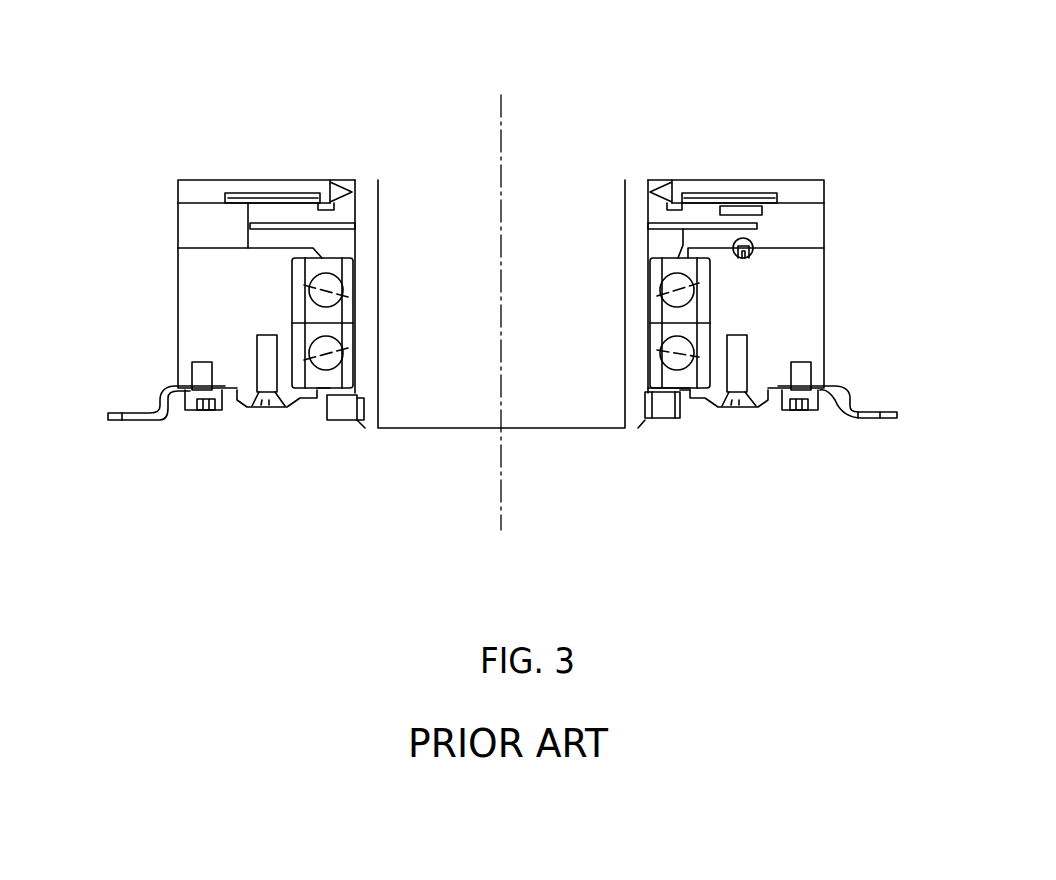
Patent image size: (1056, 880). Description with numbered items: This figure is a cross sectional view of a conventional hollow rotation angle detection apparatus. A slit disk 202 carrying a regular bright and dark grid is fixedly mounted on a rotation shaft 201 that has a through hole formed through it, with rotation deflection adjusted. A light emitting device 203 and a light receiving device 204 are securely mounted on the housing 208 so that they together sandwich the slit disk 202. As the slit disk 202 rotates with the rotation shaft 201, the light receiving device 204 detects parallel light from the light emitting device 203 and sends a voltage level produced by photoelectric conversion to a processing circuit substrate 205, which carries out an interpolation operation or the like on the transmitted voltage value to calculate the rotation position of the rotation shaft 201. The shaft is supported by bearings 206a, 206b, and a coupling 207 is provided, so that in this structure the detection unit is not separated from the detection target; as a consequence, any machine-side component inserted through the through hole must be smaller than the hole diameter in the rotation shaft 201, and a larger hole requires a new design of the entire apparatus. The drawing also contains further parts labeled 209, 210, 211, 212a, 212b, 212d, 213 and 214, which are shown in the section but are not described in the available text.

The rotation shaft 201 is at (627, 190).
The slit disk 202 is at (272, 222).
The light emitting device 203 is at (747, 250).
The light receiving device 204 is at (753, 212).
The processing circuit substrate 205 is at (735, 198).
The bearing 206a is at (688, 287).
The bearing 206b is at (688, 347).
The coupling 207 is at (152, 400).
The housing 208 is at (206, 287).
The terminal block 209 is at (663, 410).
The terminal base 210 is at (678, 390).
The terminal pin 211 is at (722, 394).
The solder land 212a is at (185, 408).
The solder land 212b is at (742, 402).
The solder land 212d is at (850, 416).
The housing cover 213 is at (203, 193).
The wedge 214 is at (352, 192).